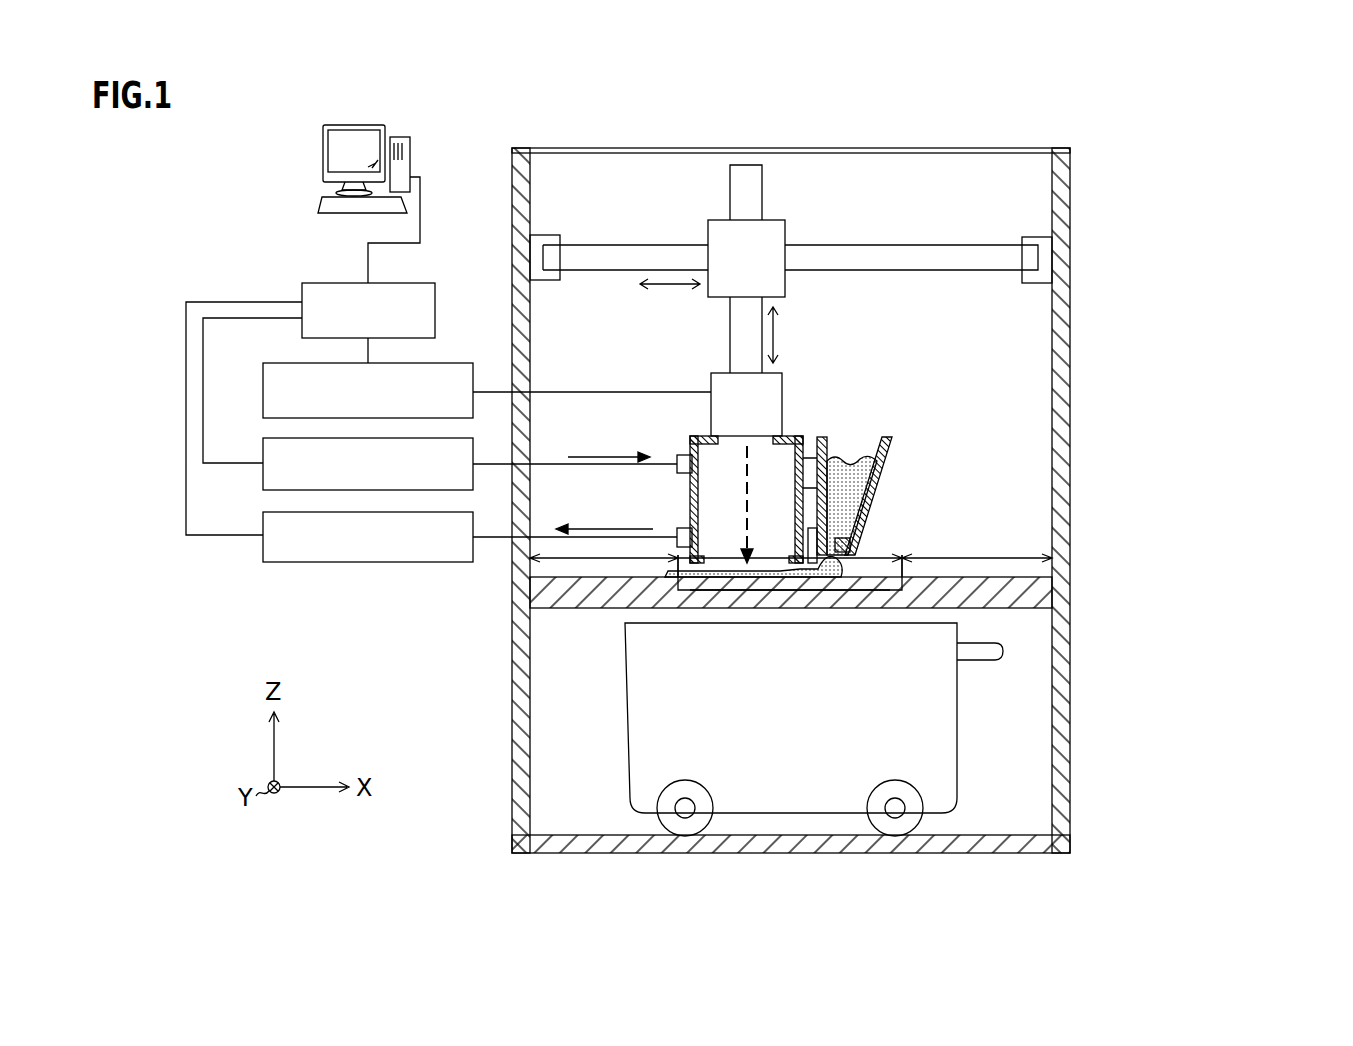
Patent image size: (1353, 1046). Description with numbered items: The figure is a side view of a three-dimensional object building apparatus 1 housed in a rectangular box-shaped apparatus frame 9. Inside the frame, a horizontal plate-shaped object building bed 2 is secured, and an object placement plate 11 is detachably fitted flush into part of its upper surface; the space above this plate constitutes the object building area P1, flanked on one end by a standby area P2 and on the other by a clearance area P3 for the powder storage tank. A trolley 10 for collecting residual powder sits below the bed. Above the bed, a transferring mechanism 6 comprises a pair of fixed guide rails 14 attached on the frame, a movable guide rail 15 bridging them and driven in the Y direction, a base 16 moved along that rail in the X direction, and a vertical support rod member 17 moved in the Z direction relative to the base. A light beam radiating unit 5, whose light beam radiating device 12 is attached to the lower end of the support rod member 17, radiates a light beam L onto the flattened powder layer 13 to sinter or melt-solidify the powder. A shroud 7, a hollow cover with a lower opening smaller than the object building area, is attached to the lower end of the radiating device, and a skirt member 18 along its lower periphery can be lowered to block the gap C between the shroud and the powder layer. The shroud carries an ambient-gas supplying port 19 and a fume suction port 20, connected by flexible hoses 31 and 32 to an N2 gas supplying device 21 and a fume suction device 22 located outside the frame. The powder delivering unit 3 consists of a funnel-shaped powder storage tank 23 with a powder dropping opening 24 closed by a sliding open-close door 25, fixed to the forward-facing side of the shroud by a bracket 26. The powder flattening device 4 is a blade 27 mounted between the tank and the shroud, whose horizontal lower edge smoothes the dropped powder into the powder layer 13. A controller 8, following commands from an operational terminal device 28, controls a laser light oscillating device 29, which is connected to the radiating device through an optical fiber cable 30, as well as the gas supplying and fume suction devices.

The three-dimensional object building apparatus 1 is at (1092, 180).
The object building bed 2 is at (1030, 598).
The powder delivering unit 3 is at (888, 453).
The powder flattening device 4 is at (803, 578).
The light beam radiating unit 5 is at (768, 378).
The transferring mechanism 6 is at (715, 208).
The shroud 7 is at (797, 440).
The controller 8 is at (334, 283).
The apparatus frame 9 is at (1062, 720).
The trolley 10 is at (930, 737).
The object placement plate 11 is at (873, 582).
The light beam radiating device 12 is at (793, 392).
The powder layer 13 is at (750, 578).
The fixed guide rails 14 is at (545, 235).
The movable guide rail 15 is at (905, 250).
The base 16 is at (773, 233).
The support rod member 17 is at (748, 193).
The skirt member 18 is at (763, 598).
The ambient-gas supplying port 19 is at (680, 455).
The fume suction port 20 is at (680, 528).
The N2 gas supplying device 21 is at (263, 448).
The fume suction device 22 is at (263, 522).
The powder storage tank 23 is at (893, 482).
The powder dropping opening 24 is at (830, 528).
The open-close door 25 is at (847, 545).
The bracket 26 is at (813, 458).
The blade 27 is at (768, 620).
The operational terminal device 28 is at (323, 152).
The laser light oscillating device 29 is at (295, 363).
The optical fiber 30 is at (545, 392).
The flexible hose 31 is at (545, 463).
The flexible hose 32 is at (545, 536).
The gap C is at (683, 572).
The light beam L is at (753, 522).
The object building area P1 is at (868, 562).
The standby area P2 is at (603, 560).
The clearance area P3 is at (985, 562).